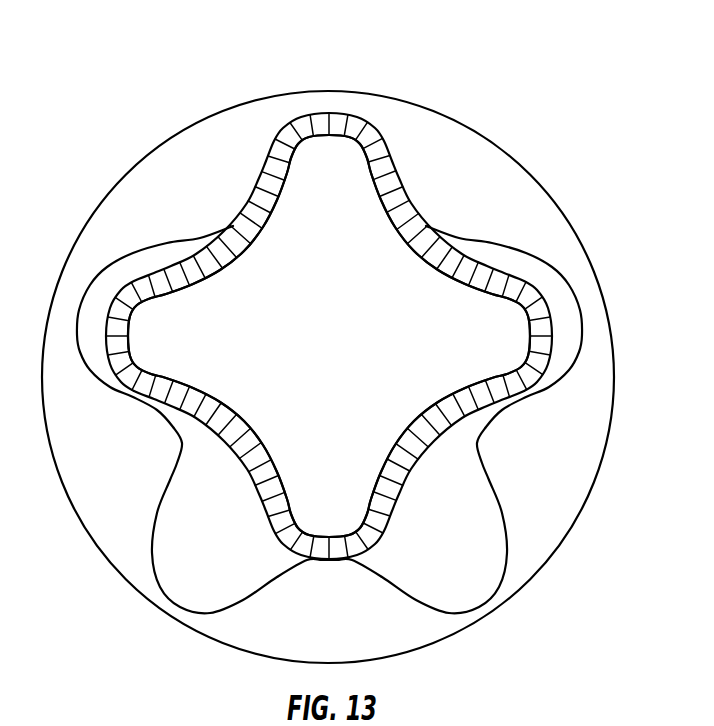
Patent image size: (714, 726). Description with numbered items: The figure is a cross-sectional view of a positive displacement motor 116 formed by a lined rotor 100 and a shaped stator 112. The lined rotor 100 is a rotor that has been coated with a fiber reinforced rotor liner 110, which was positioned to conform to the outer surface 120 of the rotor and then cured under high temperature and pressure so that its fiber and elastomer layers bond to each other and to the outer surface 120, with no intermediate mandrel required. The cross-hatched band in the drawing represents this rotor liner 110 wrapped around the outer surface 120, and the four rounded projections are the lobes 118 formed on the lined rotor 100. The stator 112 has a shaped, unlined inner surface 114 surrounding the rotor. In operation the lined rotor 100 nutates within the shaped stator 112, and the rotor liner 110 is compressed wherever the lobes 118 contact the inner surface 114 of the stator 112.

The lined rotor 100 is at (352, 350).
The fiber reinforced rotor liner 110 is at (398, 336).
The stator 112 is at (328, 377).
The inner surface 114 is at (366, 419).
The positive displacement motor 116 is at (133, 109).
The lobes 118 is at (394, 336).
The outer surface 120 is at (366, 355).